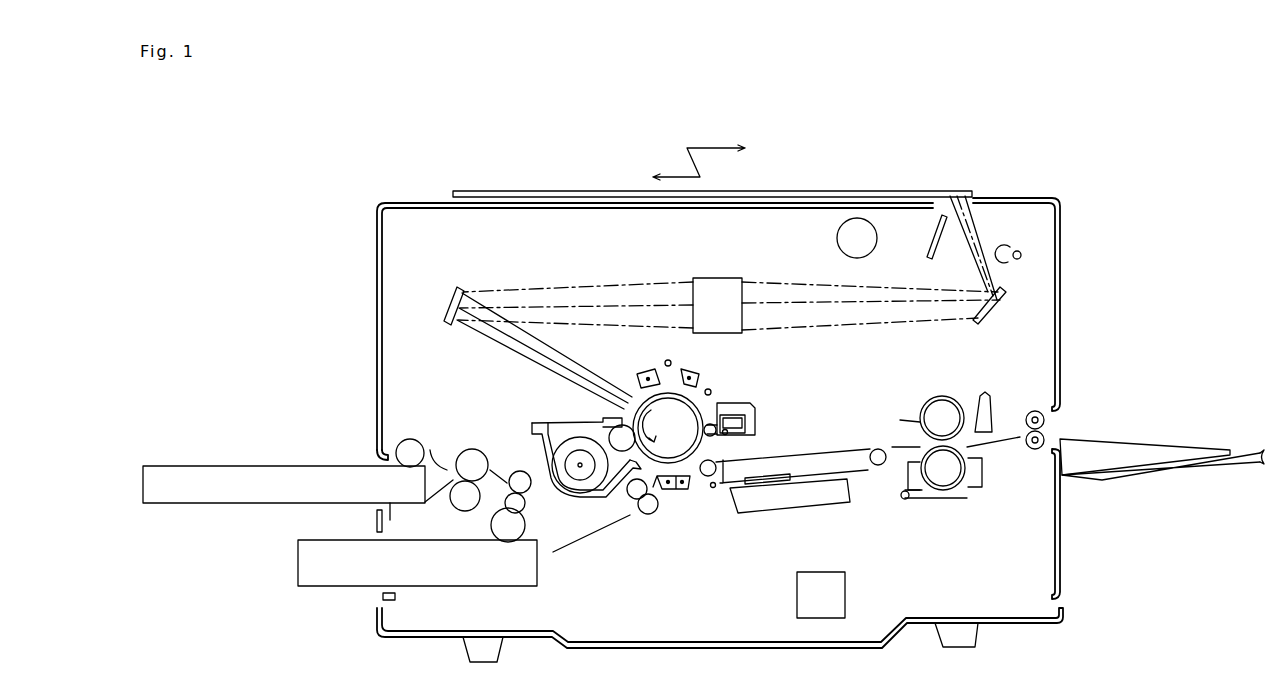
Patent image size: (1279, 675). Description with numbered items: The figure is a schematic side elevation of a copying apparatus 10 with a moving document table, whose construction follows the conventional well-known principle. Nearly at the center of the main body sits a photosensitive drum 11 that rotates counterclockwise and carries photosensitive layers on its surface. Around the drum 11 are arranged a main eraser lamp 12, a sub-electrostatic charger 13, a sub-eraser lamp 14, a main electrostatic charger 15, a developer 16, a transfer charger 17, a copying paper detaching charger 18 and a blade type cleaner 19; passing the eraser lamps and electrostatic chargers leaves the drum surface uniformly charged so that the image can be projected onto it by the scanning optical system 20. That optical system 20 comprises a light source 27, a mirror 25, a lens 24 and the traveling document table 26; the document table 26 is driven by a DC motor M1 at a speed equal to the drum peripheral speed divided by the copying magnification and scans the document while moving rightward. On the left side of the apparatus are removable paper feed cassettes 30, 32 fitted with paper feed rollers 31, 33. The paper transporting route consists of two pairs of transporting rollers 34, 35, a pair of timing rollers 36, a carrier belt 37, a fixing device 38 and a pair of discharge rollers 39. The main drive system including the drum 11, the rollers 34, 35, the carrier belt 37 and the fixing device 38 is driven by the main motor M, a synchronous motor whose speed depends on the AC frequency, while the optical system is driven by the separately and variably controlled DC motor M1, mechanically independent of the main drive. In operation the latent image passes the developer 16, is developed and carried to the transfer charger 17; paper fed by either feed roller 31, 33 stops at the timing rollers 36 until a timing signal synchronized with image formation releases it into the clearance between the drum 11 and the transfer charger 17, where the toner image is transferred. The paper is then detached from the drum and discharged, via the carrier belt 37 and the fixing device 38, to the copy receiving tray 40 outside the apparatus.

The copying apparatus 10 is at (986, 190).
The photosensitive drum 11 is at (667, 392).
The main eraser lamp 12 is at (712, 391).
The sub-electrostatic charger 13 is at (700, 373).
The sub-eraser lamp 14 is at (671, 360).
The main electrostatic charger 15 is at (640, 372).
The developer 16 is at (567, 420).
The transfer charger 17 is at (670, 492).
The copying paper detaching charger 18 is at (687, 490).
The blade type cleaner 19 is at (753, 405).
The scanning optical system 20 is at (797, 248).
The lens 24 is at (713, 277).
The mirror 25 is at (453, 300).
The document table 26 is at (815, 193).
The light source 27 is at (1026, 248).
The paper feed cassette 30 is at (225, 466).
The paper feed roller 31 is at (398, 443).
The paper feed cassette 32 is at (298, 580).
The paper feed roller 33 is at (503, 542).
The transporting rollers 34 is at (470, 449).
The transporting rollers 35 is at (528, 505).
The timing rollers 36 is at (650, 517).
The carrier belt 37 is at (817, 450).
The fixing device 38 is at (941, 410).
The discharge rollers 39 is at (1035, 450).
The copy receiving tray 40 is at (1167, 473).
The main motor M is at (845, 588).
The DC motor M1 is at (860, 220).